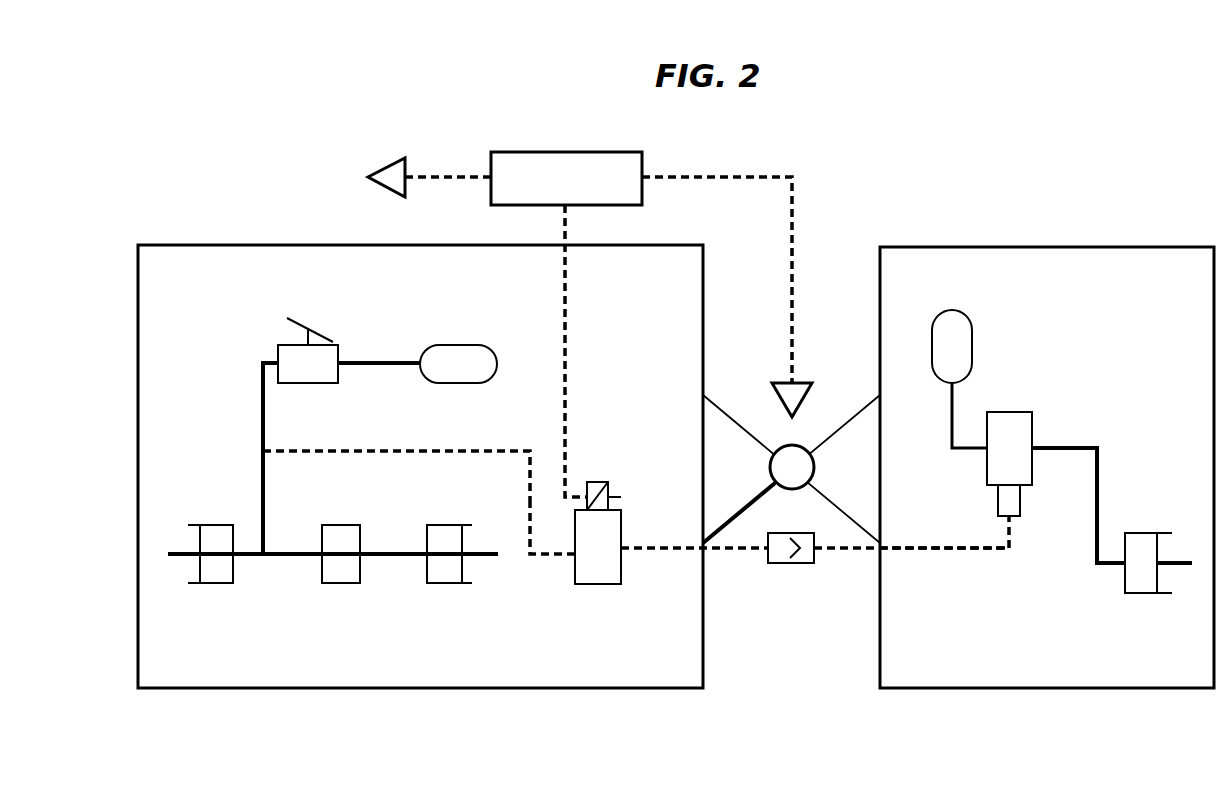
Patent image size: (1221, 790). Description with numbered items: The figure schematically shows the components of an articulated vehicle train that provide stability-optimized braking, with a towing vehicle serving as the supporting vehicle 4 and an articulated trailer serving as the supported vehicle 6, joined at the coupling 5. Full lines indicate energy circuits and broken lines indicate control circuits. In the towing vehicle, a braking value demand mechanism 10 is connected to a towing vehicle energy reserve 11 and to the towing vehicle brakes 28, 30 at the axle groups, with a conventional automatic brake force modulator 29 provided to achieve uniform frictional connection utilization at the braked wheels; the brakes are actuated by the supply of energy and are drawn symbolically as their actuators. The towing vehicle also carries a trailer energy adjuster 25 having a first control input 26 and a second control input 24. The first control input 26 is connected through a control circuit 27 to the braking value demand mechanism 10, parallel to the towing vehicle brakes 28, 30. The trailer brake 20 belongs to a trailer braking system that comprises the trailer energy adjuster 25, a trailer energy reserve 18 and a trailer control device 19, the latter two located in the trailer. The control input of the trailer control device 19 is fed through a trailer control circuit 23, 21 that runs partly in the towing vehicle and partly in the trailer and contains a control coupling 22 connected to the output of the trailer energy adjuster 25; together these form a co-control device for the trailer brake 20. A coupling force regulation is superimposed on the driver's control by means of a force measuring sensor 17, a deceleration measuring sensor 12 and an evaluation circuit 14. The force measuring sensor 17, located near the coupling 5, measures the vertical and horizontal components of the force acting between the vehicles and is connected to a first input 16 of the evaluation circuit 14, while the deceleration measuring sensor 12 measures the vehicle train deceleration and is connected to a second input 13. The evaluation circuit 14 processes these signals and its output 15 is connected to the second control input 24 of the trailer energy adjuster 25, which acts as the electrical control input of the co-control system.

The supporting vehicle 4 is at (138, 289).
The coupling 5 is at (787, 456).
The supported vehicle 6 is at (1155, 258).
The braking value demand mechanism 10 is at (282, 352).
The towing vehicle energy reserve 11 is at (458, 352).
The deceleration measuring sensor 12 is at (385, 170).
The second input 13 is at (452, 176).
The evaluation circuit 14 is at (562, 160).
The output 15 is at (570, 218).
The first input 16 is at (718, 176).
The force measuring sensor 17 is at (795, 388).
The trailer energy reserve 18 is at (948, 322).
The trailer control device 19 is at (1000, 420).
The trailer brake 20 is at (1135, 545).
The trailer control circuit 21 is at (925, 548).
The control coupling 22 is at (782, 565).
The trailer control circuit 23 is at (650, 552).
The second control input 24 is at (603, 502).
The trailer energy adjuster 25 is at (600, 576).
The first control input 26 is at (552, 558).
The control circuit 27 is at (527, 518).
The towing vehicle brake 28 is at (438, 578).
The automatic brake force modulator 29 is at (338, 578).
The towing vehicle brake 30 is at (218, 578).